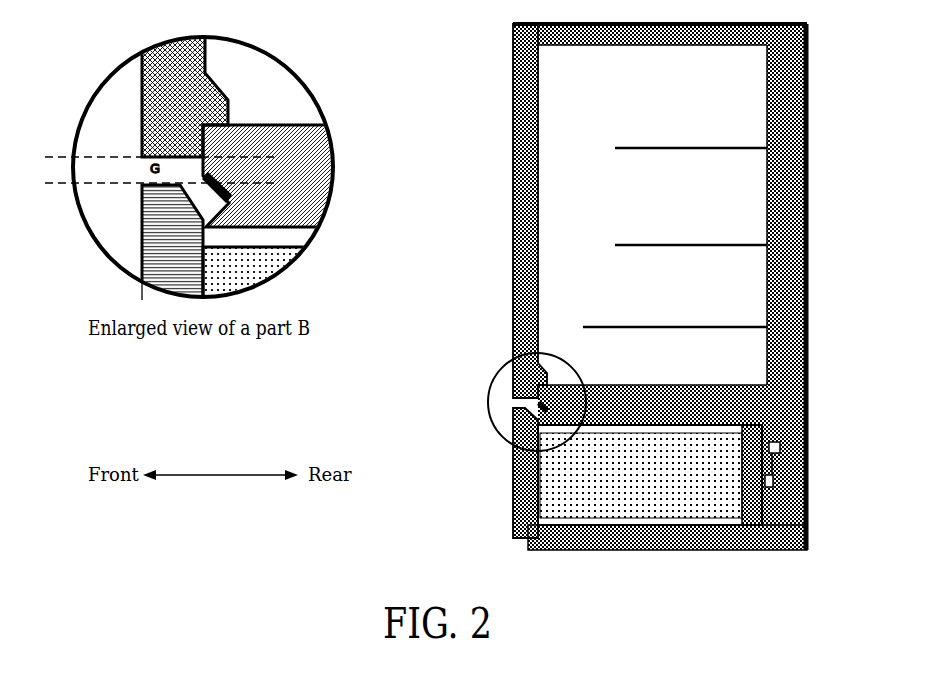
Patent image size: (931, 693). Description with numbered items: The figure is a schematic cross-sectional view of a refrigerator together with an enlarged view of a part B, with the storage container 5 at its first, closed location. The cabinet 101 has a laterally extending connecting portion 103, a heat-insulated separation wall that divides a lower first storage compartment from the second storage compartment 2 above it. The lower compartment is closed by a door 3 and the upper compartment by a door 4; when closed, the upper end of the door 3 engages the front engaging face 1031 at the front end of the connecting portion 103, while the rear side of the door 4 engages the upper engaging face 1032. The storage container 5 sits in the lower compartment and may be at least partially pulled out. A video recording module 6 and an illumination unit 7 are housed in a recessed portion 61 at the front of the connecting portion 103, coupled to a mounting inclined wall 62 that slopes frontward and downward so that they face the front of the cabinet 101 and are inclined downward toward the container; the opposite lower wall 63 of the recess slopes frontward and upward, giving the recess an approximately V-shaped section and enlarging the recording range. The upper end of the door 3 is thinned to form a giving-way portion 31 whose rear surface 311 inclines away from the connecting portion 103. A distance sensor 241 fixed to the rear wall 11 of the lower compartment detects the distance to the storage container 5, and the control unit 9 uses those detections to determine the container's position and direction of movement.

The cabinet 101 is at (792, 103).
The connecting portion 103 is at (668, 400).
The second storage compartment 2 is at (672, 207).
The door 3 is at (513, 493).
The door 4 is at (513, 110).
The storage container 5 is at (668, 505).
The video recording module 6 is at (415, 292).
The illumination unit 7 is at (233, 194).
The control unit 9 is at (780, 446).
The rear wall of the first storage compartment 11 is at (808, 460).
The distance sensor 241 is at (773, 482).
The giving-way portion 31 is at (185, 210).
The rear surface 311 is at (142, 215).
The front engaging face 1031 is at (197, 223).
The upper engaging face 1032 is at (203, 150).
The recessed portion 61 is at (212, 200).
The mounting inclined wall 62 is at (225, 176).
The lower wall 63 is at (223, 221).
The part B is at (500, 382).